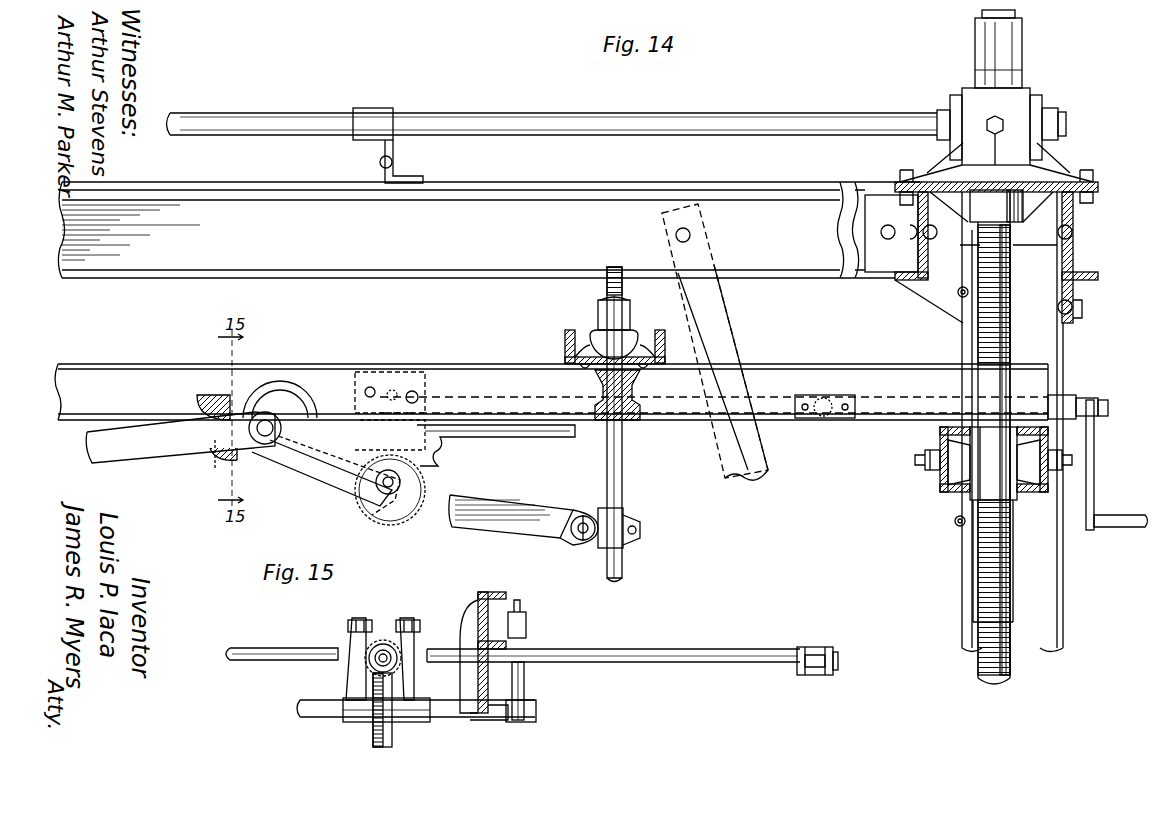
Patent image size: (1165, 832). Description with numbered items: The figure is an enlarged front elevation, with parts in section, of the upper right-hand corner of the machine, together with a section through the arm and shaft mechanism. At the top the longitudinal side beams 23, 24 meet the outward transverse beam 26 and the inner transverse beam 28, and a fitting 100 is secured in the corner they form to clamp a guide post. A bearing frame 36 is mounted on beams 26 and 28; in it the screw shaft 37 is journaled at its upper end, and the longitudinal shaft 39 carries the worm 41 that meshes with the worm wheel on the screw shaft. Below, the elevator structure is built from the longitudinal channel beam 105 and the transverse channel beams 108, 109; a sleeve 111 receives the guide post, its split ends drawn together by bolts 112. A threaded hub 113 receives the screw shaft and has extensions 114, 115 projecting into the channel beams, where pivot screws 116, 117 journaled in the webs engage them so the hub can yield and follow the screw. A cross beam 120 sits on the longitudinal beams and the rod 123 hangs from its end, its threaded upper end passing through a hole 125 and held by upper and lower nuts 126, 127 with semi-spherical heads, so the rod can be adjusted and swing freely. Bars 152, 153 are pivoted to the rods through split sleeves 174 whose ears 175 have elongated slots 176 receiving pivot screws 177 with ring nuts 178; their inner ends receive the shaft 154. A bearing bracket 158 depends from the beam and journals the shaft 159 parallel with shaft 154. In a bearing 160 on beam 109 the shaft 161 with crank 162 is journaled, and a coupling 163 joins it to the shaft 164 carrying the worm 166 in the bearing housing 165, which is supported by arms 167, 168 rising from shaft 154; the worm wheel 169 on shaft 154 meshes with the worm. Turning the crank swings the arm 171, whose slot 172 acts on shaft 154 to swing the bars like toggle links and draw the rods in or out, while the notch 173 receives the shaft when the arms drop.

In FIG. 14, the longitudinal side beam 23 is at (587, 186).
In FIG. 14, the longitudinal side beam 24 is at (847, 192).
In FIG. 14, the outward transverse beam 26 is at (1068, 255).
In FIG. 14, the transverse beam 28 is at (920, 253).
In FIG. 14, the bearing frame 36 is at (1046, 179).
In FIG. 14, the screw shaft 37 is at (985, 672).
In FIG. 14, the shaft 39 is at (576, 117).
In FIG. 14, the worm 41 is at (1012, 125).
In FIG. 14, the fitting 100 is at (1030, 232).
In FIG. 14, the longitudinal channel beam 105 is at (873, 378).
In FIG. 14, the transverse channel beam 108 is at (930, 457).
In FIG. 14, the transverse channel beam 109 is at (1062, 462).
In FIG. 14, the sleeve 111 is at (1015, 343).
In FIG. 14, the bolt 112 is at (960, 297).
In FIG. 14, the nut or threaded hub 113 is at (996, 470).
In FIG. 14, the extension 114 is at (940, 486).
In FIG. 14, the extension 115 is at (1040, 449).
In FIG. 14, the pivot screw 116 is at (925, 468).
In FIG. 14, the pivot screw 117 is at (1064, 466).
In FIG. 14, the cross beam 120 is at (660, 358).
In FIG. 14, the rod 123 is at (622, 476).
In FIG. 14, the hole 125 is at (641, 352).
In FIG. 14, the upper nut 126 is at (600, 335).
In FIG. 14, the lower nut 127 is at (640, 400).
In FIG. 14, the bar 152 is at (155, 452).
In FIG. 15, the bar 152 is at (818, 676).
In FIG. 14, the bar 153 is at (298, 456).
In FIG. 15, the bar 153 is at (810, 650).
In FIG. 14, the shaft 154 is at (265, 442).
In FIG. 15, the shaft 154 is at (265, 651).
In FIG. 14, the bearing bracket 158 is at (430, 469).
In FIG. 14, the shaft 159 is at (384, 490).
In FIG. 15, the shaft 159 is at (325, 719).
In FIG. 14, the bearing 160 is at (1060, 398).
In FIG. 14, the shaft 161 is at (922, 402).
In FIG. 14, the crank 162 is at (1092, 500).
In FIG. 14, the coupling 163 is at (826, 421).
In FIG. 14, the shaft 164 is at (678, 421).
In FIG. 15, the shaft 164 is at (370, 650).
In FIG. 15, the bearing housing 165 is at (383, 640).
In FIG. 15, the worm 166 is at (405, 650).
In FIG. 15, the arm 167 is at (352, 683).
In FIG. 14, the arm 168 is at (400, 375).
In FIG. 15, the arm 168 is at (412, 681).
In FIG. 15, the worm wheel 169 is at (378, 745).
In FIG. 14, the arm 171 is at (340, 464).
In FIG. 15, the arm 171 is at (528, 692).
In FIG. 14, the slot 172 is at (218, 395).
In FIG. 15, the slot 172 is at (528, 668).
In FIG. 14, the notch 173 is at (268, 416).
In FIG. 15, the notch 173 is at (528, 648).
In FIG. 14, the split sleeve 174 is at (628, 521).
In FIG. 14, the ear 175 is at (578, 542).
In FIG. 14, the elongated slot 176 is at (570, 535).
In FIG. 14, the pivot screw 177 is at (577, 520).
In FIG. 14, the ring nut 178 is at (585, 518).